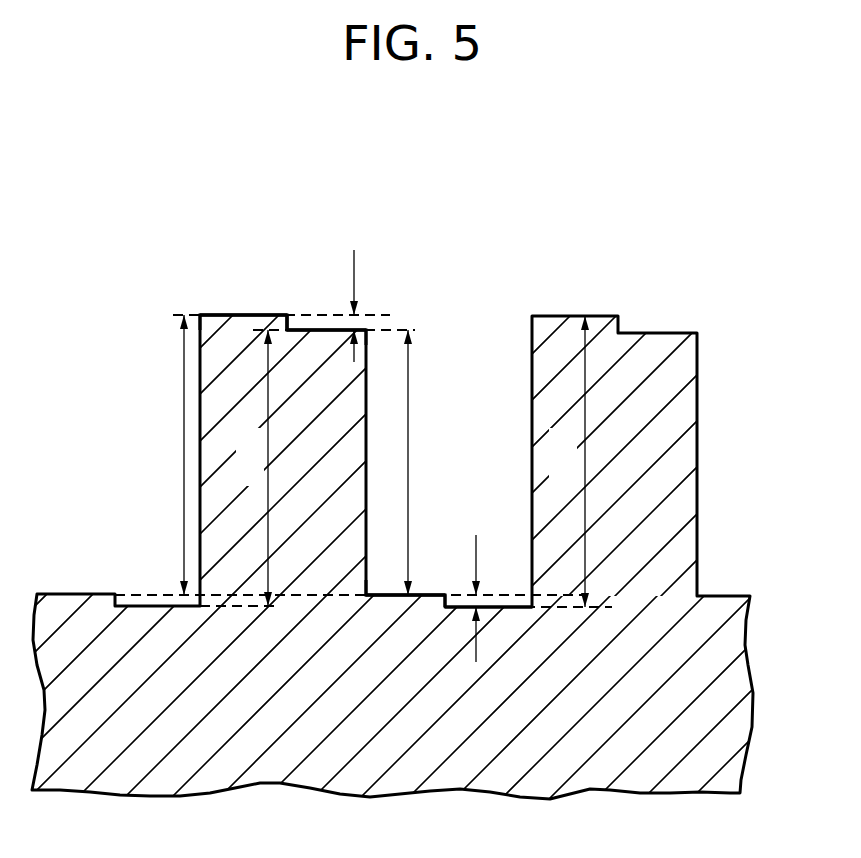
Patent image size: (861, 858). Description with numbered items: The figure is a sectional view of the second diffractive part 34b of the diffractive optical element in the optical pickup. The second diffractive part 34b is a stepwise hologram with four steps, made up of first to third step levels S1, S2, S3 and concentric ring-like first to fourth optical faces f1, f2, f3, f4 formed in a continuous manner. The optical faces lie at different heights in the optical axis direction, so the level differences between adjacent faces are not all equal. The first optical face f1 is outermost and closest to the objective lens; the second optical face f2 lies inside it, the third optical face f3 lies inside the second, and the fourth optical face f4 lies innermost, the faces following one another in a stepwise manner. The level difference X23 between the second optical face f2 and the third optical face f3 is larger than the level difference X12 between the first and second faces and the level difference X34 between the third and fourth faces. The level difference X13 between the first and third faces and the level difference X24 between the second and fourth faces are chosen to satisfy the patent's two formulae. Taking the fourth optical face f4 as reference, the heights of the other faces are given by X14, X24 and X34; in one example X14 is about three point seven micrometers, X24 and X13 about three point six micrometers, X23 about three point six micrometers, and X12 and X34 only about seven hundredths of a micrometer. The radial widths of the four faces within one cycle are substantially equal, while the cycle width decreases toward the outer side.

The second diffractive part 34b is at (146, 194).
The first optical face f1 is at (230, 312).
The second optical face f2 is at (307, 328).
The third optical face f3 is at (424, 593).
The fourth optical face f4 is at (505, 605).
The first step level S1 is at (252, 312).
The second step level S2 is at (362, 327).
The third step level S3 is at (382, 592).
The level difference between the first optical face and the second optical face X12 is at (340, 301).
The level difference between the first optical face and the third optical face X13 is at (169, 455).
The level difference between the first optical face and the fourth optical face X14 is at (568, 461).
The level difference between the second optical face and the third optical face X23 is at (394, 462).
The level difference between the second optical face and the fourth optical face X24 is at (253, 468).
The level difference between the third optical face and the fourth optical face X34 is at (463, 587).